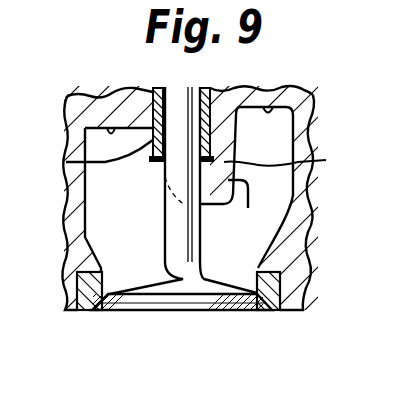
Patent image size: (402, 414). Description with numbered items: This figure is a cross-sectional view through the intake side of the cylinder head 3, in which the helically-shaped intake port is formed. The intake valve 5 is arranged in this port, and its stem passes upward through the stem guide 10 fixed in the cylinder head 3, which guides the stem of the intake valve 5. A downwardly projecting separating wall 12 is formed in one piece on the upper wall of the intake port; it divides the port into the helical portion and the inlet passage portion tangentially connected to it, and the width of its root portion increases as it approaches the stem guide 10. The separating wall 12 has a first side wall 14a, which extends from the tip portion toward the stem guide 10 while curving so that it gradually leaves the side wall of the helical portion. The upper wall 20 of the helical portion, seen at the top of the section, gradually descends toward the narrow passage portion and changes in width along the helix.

The cylinder head 3 is at (313, 100).
The intake valve 5 is at (165, 300).
The stem guide 10 is at (66, 162).
The separating wall 12 is at (292, 161).
The first side wall 14a is at (243, 190).
The upper wall of the helical portion 20 is at (113, 126).